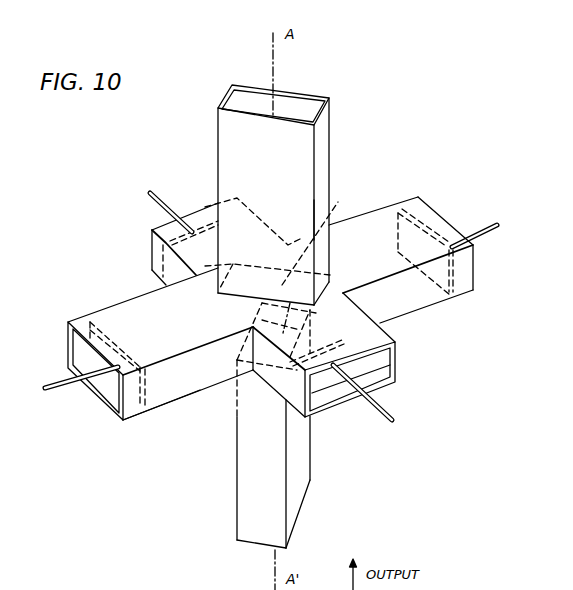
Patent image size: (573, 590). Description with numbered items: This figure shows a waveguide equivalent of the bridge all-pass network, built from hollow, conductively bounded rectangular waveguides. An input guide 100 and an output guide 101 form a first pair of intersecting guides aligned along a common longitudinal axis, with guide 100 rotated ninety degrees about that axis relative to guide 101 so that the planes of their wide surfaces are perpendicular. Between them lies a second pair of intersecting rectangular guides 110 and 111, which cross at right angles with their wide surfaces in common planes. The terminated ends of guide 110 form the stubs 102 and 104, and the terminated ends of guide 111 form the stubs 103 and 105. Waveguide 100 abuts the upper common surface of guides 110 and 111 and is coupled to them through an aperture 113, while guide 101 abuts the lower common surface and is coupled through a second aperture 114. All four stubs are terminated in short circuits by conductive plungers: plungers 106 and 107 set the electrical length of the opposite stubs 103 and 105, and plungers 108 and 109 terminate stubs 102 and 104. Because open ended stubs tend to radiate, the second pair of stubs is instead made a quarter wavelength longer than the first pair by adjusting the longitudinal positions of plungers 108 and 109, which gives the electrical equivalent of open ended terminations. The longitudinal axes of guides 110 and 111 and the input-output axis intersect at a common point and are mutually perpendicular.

The input guide 100 is at (325, 153).
The output guide 101 is at (312, 450).
The stub 102 is at (170, 393).
The stub 103 is at (153, 247).
The stub 104 is at (466, 267).
The stub 105 is at (275, 381).
The conductive plunger 106 is at (163, 266).
The conductive plunger 107 is at (370, 362).
The conductive plunger 108 is at (90, 358).
The conductive plunger 109 is at (468, 292).
The rectangular guide 110 is at (192, 391).
The rectangular guide 111 is at (332, 409).
The aperture 113 is at (326, 210).
The second aperture 114 is at (262, 320).